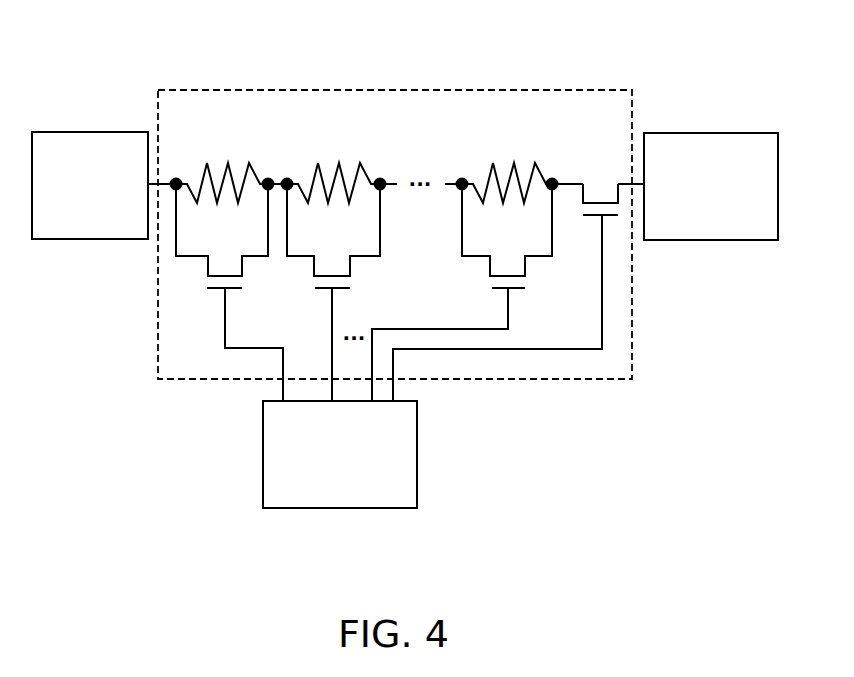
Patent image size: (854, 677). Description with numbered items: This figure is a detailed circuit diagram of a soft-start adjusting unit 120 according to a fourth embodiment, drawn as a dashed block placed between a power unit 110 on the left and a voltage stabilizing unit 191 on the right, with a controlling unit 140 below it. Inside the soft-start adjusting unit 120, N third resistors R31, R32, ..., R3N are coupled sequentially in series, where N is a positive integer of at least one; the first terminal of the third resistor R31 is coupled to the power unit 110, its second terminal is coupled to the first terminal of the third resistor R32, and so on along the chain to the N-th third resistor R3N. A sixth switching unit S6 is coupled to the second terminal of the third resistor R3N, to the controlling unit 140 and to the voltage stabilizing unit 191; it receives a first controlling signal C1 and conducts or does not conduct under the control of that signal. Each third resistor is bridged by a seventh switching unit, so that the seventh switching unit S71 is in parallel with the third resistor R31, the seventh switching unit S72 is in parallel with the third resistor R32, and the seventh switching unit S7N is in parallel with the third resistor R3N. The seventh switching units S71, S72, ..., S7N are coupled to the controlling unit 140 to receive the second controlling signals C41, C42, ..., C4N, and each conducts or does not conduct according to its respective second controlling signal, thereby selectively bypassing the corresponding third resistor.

The power unit 110 is at (75, 132).
The soft-start adjusting unit 120 is at (458, 90).
The controlling unit 140 is at (417, 445).
The voltage stabilizing unit 191 is at (711, 133).
The third resistor R31 is at (222, 168).
The third resistor R32 is at (333, 168).
The third resistor R3N is at (507, 168).
The seventh switching unit S71 is at (222, 236).
The seventh switching unit S72 is at (333, 236).
The seventh switching unit S7N is at (507, 236).
The sixth switching unit S6 is at (600, 184).
The second controlling signal C41 is at (254, 344).
The second controlling signal C42 is at (355, 344).
The second controlling signal C4N is at (466, 344).
The first controlling signal C1 is at (497, 308).